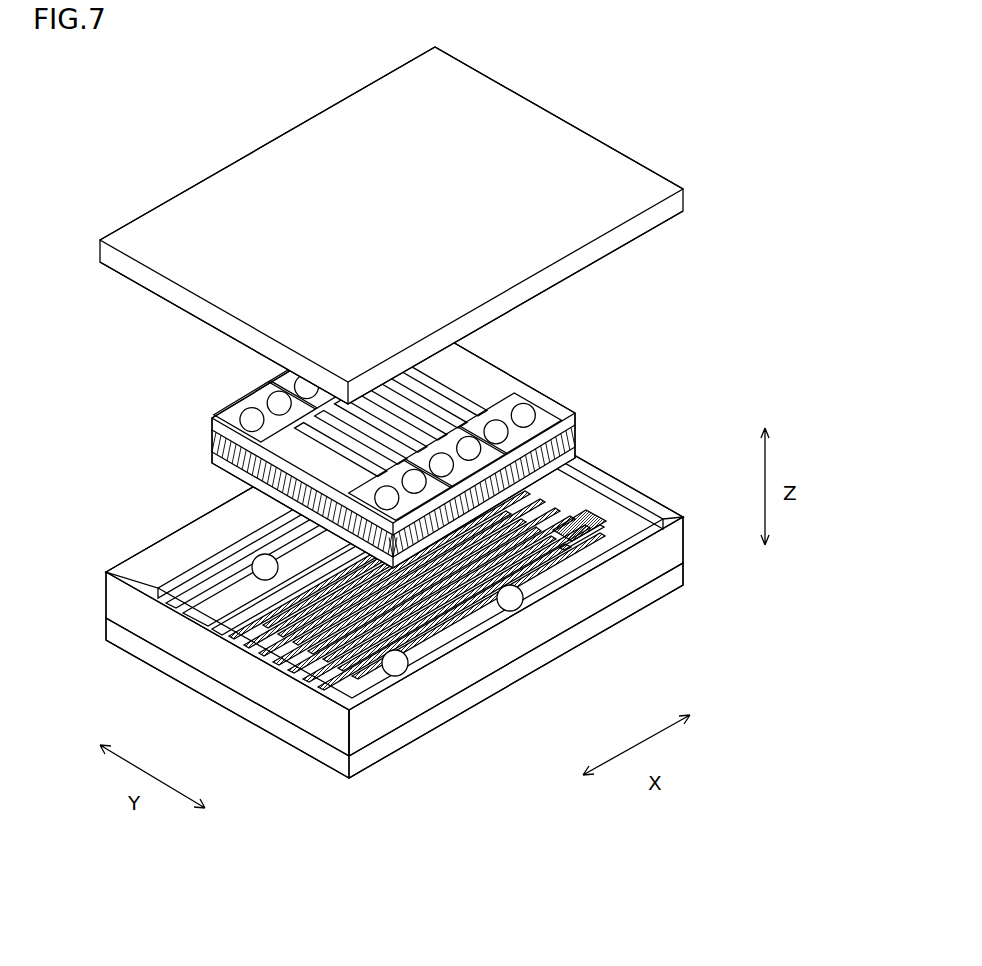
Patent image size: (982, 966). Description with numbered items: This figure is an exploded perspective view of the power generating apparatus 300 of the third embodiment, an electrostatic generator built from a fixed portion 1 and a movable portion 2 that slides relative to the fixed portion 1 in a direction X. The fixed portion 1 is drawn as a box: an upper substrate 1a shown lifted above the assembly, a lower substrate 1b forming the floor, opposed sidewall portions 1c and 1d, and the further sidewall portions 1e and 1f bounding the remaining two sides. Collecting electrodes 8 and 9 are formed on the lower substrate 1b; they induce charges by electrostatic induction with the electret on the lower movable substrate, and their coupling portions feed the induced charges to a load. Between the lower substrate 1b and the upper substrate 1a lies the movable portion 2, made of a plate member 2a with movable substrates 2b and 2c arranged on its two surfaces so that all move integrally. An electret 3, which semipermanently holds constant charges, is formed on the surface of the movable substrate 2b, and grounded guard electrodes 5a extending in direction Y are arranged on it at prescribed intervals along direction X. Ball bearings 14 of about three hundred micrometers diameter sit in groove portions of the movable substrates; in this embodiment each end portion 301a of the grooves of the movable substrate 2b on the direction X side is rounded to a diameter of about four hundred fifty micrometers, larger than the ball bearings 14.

The power generating apparatus 300 is at (739, 107).
The fixed portion 1 is at (394, 578).
The upper substrate 1a is at (647, 184).
The lower substrate 1b is at (658, 592).
The sidewall portion 1c is at (228, 660).
The sidewall portion 1d is at (648, 499).
The sidewall portion 1e is at (167, 540).
The sidewall portion 1f is at (514, 652).
The movable portion 2 is at (426, 438).
The plate member 2a is at (577, 437).
The movable substrate 2b is at (577, 416).
The movable substrate 2c is at (423, 500).
The electret 3 is at (462, 374).
The guard electrode 5a is at (487, 393).
The collecting electrode 8 is at (268, 654).
The collecting electrode 9 is at (302, 660).
The ball bearing 14 is at (272, 394).
The end portion 301a is at (247, 417).